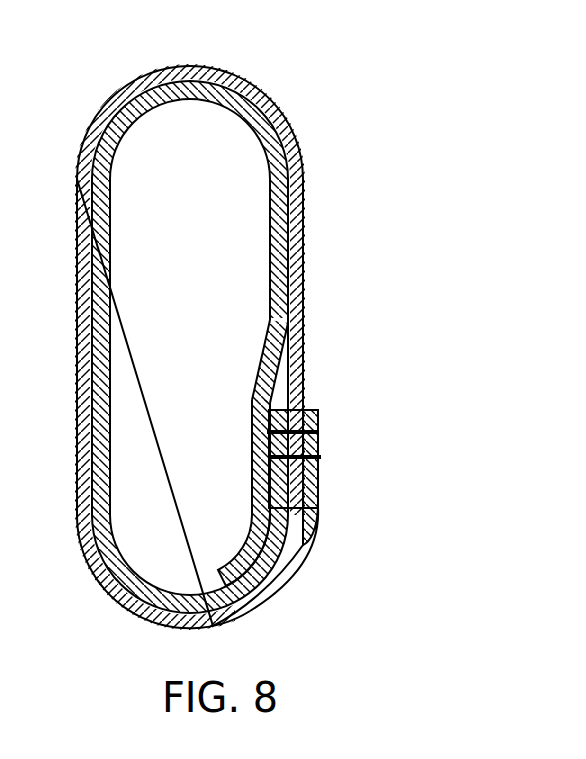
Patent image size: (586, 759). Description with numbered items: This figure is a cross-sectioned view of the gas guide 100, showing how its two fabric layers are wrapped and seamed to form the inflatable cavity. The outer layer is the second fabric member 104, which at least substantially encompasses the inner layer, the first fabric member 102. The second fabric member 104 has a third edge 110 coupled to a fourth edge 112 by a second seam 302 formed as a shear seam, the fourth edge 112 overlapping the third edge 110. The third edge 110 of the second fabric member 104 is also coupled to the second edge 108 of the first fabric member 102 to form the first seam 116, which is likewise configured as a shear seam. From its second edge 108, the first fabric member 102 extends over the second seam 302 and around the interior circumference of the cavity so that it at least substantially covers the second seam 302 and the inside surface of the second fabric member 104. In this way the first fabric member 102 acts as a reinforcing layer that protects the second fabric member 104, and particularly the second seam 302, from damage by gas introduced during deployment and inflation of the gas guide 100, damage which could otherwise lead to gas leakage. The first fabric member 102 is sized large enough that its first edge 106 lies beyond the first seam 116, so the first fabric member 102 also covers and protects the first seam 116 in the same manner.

The gas guide 100 is at (340, 114).
The first fabric member 102 is at (254, 138).
The second fabric member 104 is at (305, 189).
The first edge 106 is at (216, 577).
The second edge 108 is at (272, 399).
The third edge 110 is at (304, 546).
The fourth edge 112 is at (313, 410).
The first seam 116 is at (320, 432).
The second seam 302 is at (321, 458).